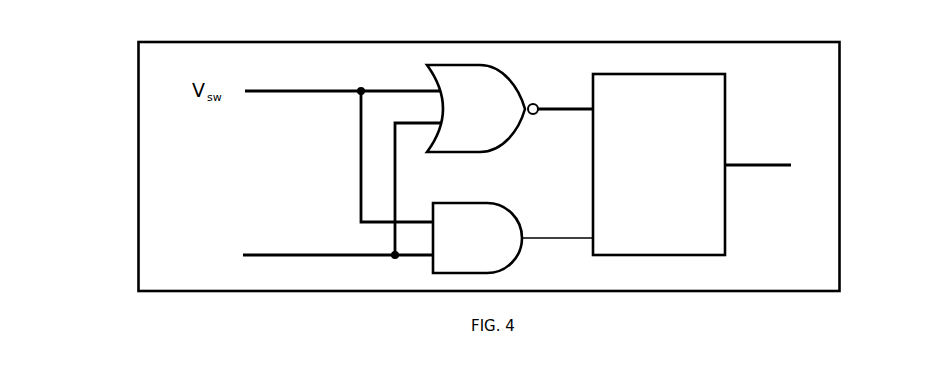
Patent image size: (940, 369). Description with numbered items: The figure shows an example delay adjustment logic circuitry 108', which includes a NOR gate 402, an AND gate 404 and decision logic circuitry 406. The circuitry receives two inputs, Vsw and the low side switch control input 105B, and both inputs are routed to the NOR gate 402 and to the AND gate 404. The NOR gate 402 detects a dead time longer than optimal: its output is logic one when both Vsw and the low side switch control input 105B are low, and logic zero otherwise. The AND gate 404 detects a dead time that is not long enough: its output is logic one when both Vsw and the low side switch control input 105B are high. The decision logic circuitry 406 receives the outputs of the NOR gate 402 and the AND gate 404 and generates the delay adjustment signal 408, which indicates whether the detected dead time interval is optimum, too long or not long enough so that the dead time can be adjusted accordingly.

The delay adjustment logic circuitry 108' is at (520, 166).
The low side switch control input 105B is at (319, 194).
The NOR gate 402 is at (510, 108).
The AND gate 404 is at (513, 238).
The decision logic circuitry 406 is at (659, 164).
The delay adjustment signal 408 is at (748, 176).